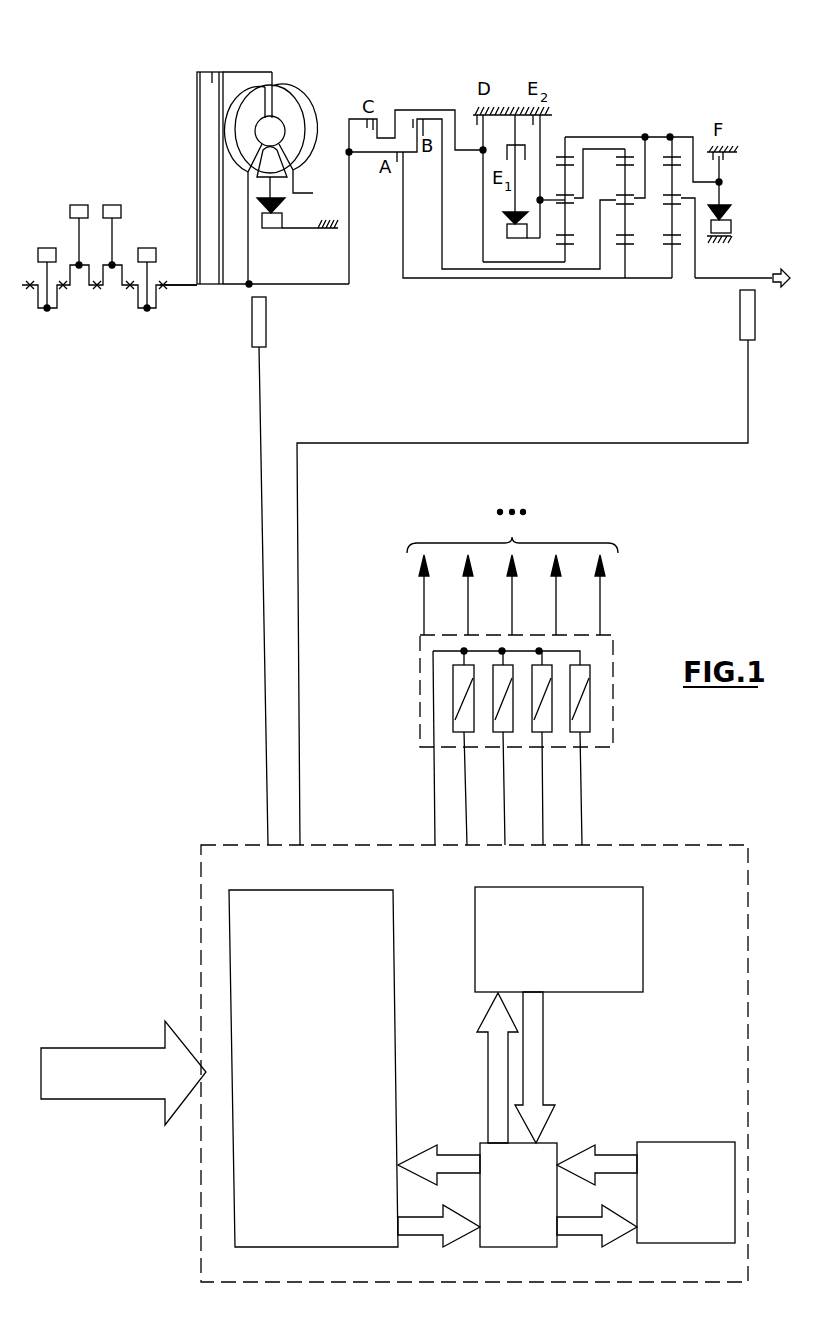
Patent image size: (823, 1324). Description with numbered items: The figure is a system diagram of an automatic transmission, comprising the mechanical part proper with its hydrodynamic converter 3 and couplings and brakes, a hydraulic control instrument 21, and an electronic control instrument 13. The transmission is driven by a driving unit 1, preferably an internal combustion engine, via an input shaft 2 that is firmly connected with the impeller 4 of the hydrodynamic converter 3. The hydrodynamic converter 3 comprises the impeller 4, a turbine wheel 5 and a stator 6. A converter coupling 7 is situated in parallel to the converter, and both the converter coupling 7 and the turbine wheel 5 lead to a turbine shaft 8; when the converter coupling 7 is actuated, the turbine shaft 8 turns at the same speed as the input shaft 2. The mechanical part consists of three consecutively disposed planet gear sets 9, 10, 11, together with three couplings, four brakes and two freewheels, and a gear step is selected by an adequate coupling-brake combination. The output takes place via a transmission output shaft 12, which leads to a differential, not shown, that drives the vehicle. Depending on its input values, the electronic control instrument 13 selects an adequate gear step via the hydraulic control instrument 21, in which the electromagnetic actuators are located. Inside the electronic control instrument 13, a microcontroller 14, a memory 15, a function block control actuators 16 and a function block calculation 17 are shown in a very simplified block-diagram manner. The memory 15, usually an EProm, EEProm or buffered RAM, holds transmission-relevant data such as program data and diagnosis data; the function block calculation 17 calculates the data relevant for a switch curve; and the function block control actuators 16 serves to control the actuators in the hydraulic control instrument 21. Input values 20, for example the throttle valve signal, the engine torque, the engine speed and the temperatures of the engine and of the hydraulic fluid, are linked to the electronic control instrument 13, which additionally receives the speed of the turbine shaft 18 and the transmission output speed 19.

The driving unit 1 is at (61, 246).
The input shaft 2 is at (182, 286).
The hydrodynamic converter 3 is at (280, 166).
The impeller 4 is at (296, 124).
The turbine wheel 5 is at (252, 124).
The stator 6 is at (276, 173).
The converter coupling 7 is at (223, 40).
The turbine shaft 8 is at (295, 285).
The planet gear set 9 is at (569, 127).
The planet gear set 10 is at (620, 127).
The planet gear set 11 is at (679, 127).
The transmission output shaft 12 is at (760, 279).
The electronic control instrument 13 is at (467, 1097).
The microcontroller 14 is at (533, 1236).
The memory 15 is at (701, 1234).
The function block control actuators 16 is at (574, 983).
The function block calculation 17 is at (332, 1227).
The speed of the turbine shaft 18 is at (263, 650).
The transmission output speed 19 is at (300, 763).
The input values 20 is at (88, 1096).
The hydraulic control instrument 21 is at (607, 718).